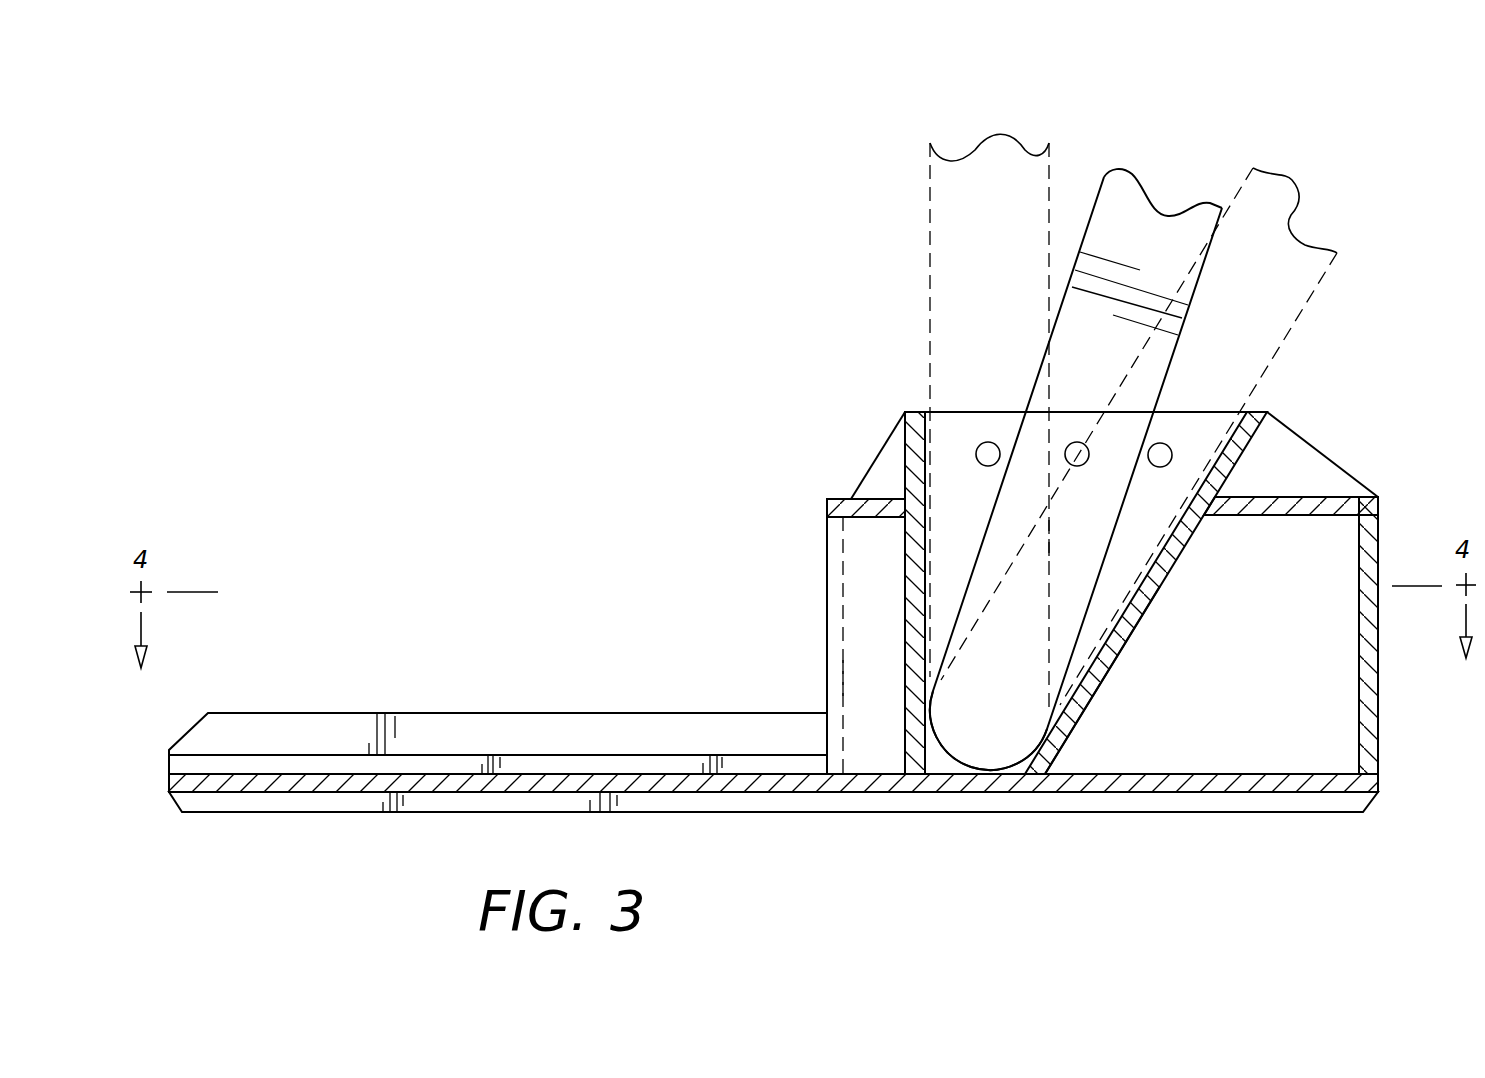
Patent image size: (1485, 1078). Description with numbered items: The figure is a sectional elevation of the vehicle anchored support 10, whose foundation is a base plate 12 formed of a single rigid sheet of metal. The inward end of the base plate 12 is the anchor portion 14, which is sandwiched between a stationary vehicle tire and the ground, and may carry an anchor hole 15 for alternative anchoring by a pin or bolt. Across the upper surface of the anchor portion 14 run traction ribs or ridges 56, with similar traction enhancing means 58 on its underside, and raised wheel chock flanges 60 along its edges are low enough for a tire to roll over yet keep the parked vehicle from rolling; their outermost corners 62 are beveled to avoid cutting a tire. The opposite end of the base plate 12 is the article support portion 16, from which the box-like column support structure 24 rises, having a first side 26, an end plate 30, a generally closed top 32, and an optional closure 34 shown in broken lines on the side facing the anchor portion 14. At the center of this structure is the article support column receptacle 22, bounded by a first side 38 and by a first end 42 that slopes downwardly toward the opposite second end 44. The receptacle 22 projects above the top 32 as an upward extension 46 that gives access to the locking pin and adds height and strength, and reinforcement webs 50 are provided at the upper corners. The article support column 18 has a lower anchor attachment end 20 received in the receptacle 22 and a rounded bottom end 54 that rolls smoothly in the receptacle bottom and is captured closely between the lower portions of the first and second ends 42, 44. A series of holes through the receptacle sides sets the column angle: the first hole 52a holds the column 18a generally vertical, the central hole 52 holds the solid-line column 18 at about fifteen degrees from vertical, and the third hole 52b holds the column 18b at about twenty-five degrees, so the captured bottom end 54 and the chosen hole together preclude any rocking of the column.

The vehicle anchored support 10 is at (612, 443).
The base plate 12 is at (837, 795).
The anchor portion 14 is at (330, 812).
The anchor hole 15 is at (528, 772).
The article support portion 16 is at (1220, 792).
The article support column 18 is at (1155, 208).
The article support column in vertical position 18a is at (1016, 122).
The article support column in inclined position 18b is at (1292, 219).
The anchor attachment end 20 is at (1092, 526).
The article support column receptacle 22 is at (948, 430).
The column support structure 24 is at (1378, 497).
The first side 26 is at (887, 666).
The end plate 30 is at (1379, 722).
The top 32 is at (845, 499).
The closure 34 is at (840, 605).
The first side of receptacle 38 is at (1160, 526).
The first end of receptacle 42 is at (1155, 597).
The second end of receptacle 44 is at (905, 578).
The upward extension 46 is at (904, 411).
The reinforcement web 50 is at (877, 455).
The central hole 52 is at (1077, 442).
The first hole 52a is at (990, 442).
The third hole 52b is at (1163, 443).
The rounded bottom end 54 is at (995, 751).
The traction ribs 56 is at (690, 755).
The bottom traction enhancing means 58 is at (706, 812).
The wheel chock flange 60 is at (372, 713).
The outermost corner 62 is at (190, 722).